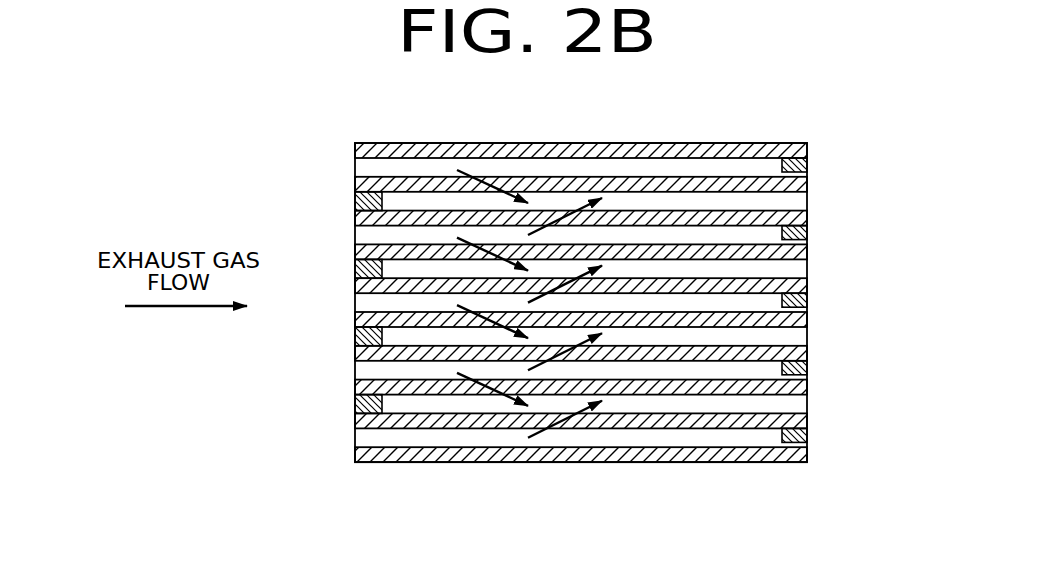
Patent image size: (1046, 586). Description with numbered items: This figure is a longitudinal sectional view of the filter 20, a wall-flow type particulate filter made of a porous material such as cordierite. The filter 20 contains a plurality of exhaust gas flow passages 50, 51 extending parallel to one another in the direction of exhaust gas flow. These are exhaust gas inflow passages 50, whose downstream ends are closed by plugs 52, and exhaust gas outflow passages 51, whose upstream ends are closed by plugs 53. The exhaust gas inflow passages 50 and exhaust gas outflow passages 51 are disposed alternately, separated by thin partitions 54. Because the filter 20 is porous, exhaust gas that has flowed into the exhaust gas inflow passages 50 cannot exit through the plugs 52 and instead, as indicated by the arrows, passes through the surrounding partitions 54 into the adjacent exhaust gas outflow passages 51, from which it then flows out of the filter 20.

The filter 20 is at (592, 128).
The exhaust gas inflow passage 50 is at (755, 143).
The exhaust gas outflow passage 51 is at (419, 199).
The plug 52 is at (807, 160).
The plug 53 is at (358, 200).
The partition 54 is at (677, 393).